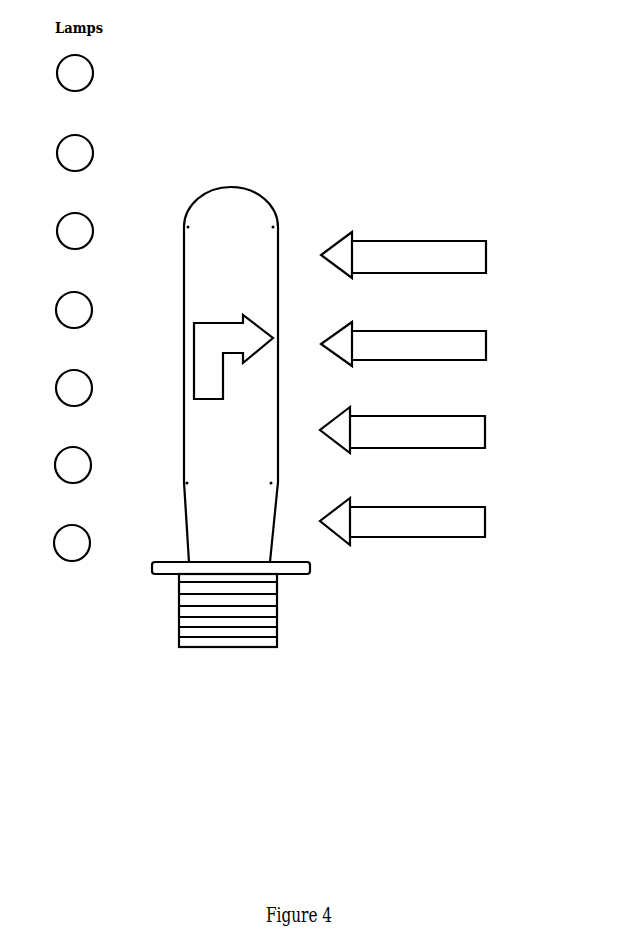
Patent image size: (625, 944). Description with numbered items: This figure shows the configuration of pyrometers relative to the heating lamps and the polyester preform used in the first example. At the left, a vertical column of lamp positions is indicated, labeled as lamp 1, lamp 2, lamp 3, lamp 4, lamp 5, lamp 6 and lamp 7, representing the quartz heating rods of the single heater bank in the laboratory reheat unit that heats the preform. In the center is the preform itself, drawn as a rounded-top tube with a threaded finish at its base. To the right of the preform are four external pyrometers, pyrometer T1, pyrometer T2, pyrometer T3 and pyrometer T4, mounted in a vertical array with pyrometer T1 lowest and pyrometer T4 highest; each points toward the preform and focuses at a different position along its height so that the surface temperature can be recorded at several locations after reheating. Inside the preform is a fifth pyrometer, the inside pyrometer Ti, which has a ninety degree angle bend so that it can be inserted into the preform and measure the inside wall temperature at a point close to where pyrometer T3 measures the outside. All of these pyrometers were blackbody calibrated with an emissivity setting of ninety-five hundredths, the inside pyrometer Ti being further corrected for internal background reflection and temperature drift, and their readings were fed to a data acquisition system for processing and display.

The lamp 1 is at (72, 543).
The lamp 2 is at (73, 465).
The lamp 3 is at (74, 388).
The lamp 4 is at (74, 310).
The lamp 5 is at (75, 231).
The lamp 6 is at (75, 153).
The lamp 7 is at (75, 73).
The inside pyrometer Ti is at (233, 357).
The pyrometer T1 is at (402, 521).
The pyrometer T2 is at (402, 430).
The pyrometer T3 is at (403, 344).
The pyrometer T4 is at (403, 255).